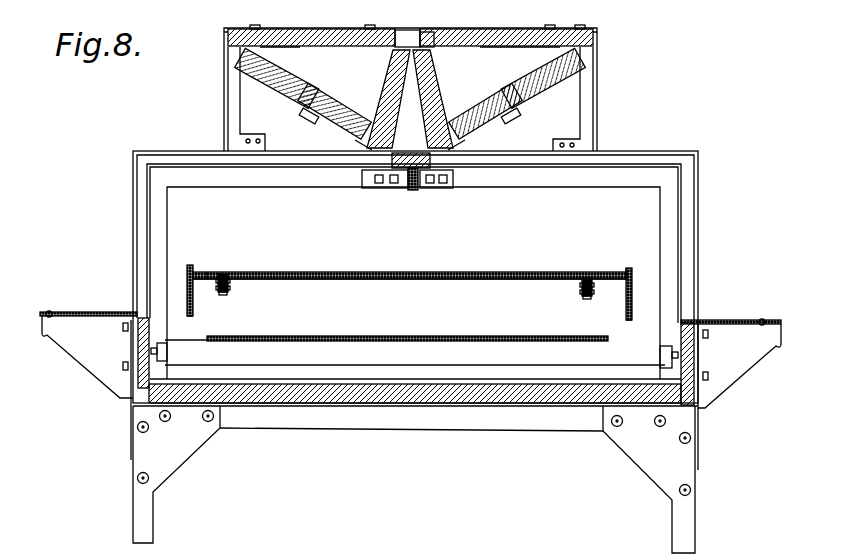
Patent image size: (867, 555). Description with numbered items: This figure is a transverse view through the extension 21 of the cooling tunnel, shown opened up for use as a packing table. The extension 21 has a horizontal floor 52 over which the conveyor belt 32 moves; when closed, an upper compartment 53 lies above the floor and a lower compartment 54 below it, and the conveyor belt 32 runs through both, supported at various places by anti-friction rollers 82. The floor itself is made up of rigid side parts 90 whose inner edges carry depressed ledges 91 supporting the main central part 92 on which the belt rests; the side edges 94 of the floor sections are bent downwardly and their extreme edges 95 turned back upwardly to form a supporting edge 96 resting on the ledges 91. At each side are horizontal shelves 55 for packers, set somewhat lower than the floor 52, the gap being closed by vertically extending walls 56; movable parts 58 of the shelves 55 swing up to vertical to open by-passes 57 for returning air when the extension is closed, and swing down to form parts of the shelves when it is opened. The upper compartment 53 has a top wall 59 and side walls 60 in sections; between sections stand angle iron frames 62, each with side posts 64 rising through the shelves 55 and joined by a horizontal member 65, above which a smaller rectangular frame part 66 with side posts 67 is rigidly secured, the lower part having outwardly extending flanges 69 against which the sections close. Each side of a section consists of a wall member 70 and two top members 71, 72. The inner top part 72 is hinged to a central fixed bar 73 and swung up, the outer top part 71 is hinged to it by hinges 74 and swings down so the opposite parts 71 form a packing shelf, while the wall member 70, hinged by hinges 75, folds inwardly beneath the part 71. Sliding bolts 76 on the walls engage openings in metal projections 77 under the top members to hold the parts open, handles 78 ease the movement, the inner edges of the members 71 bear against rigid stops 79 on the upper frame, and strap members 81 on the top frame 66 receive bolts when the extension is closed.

The extension 21 is at (431, 439).
The conveyor belt 32 is at (320, 271).
The horizontal floor 52 is at (458, 277).
The upper compartment 53 is at (415, 283).
The lower compartment 54 is at (415, 337).
The horizontal shelves 55 is at (68, 312).
The vertically extending walls 56 is at (193, 300).
The by-passes 57 is at (189, 265).
The movable parts of the shelves 58 is at (196, 268).
The top wall 59 is at (315, 50).
The side walls 60 is at (297, 105).
The angle iron frames 62 is at (414, 111).
The side post 64 is at (133, 220).
The horizontal member 65 is at (312, 158).
The smaller part of the frame 66 is at (601, 111).
The side posts 67 is at (224, 68).
The outwardly extending flanges 69 is at (637, 185).
The wall member 70 is at (318, 97).
The outer top member 71 is at (280, 86).
The inner top member 72 is at (392, 80).
The central fixed bar 73 is at (398, 185).
The hinges 74 is at (427, 30).
The hinges 75 is at (234, 30).
The sliding bolts 76 is at (322, 150).
The metal projections 77 is at (367, 140).
The handles 78 is at (312, 121).
The rigid stops 79 is at (408, 30).
The strap members 81 is at (224, 42).
The anti-friction rollers 82 is at (452, 340).
The rigid side parts 90 is at (216, 273).
The ledges 91 is at (402, 287).
The main central part of the floor 92 is at (456, 281).
The side edges 94 is at (229, 281).
The extreme edges 95 is at (230, 290).
The supporting edge 96 is at (230, 294).